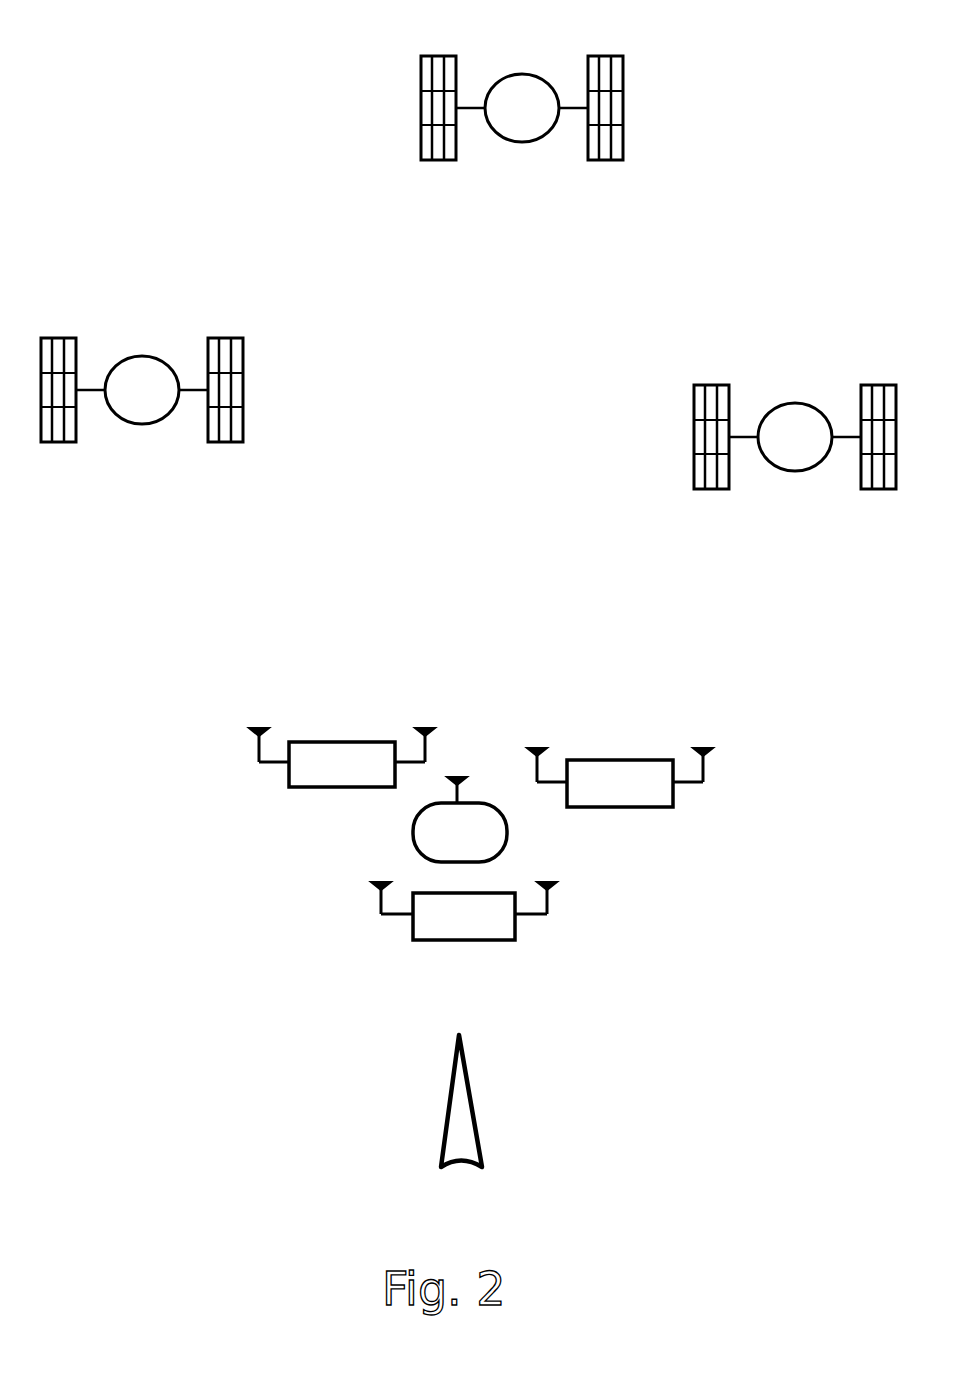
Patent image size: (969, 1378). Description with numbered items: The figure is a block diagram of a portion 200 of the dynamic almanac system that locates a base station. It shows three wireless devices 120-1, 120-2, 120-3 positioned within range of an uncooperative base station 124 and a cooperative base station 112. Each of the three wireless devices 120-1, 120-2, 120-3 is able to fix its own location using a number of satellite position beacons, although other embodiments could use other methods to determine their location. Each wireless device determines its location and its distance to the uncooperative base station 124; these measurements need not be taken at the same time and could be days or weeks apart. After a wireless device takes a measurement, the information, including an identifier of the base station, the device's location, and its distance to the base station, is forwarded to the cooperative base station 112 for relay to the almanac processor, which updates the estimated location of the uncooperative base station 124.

The wireless device 120-1 is at (464, 911).
The wireless device 120-2 is at (342, 757).
The wireless device 120-3 is at (620, 777).
The uncooperative base station 124 is at (460, 819).
The cooperative base station 112 is at (465, 1052).
The portion of the dynamic almanac system 200 is at (784, 173).